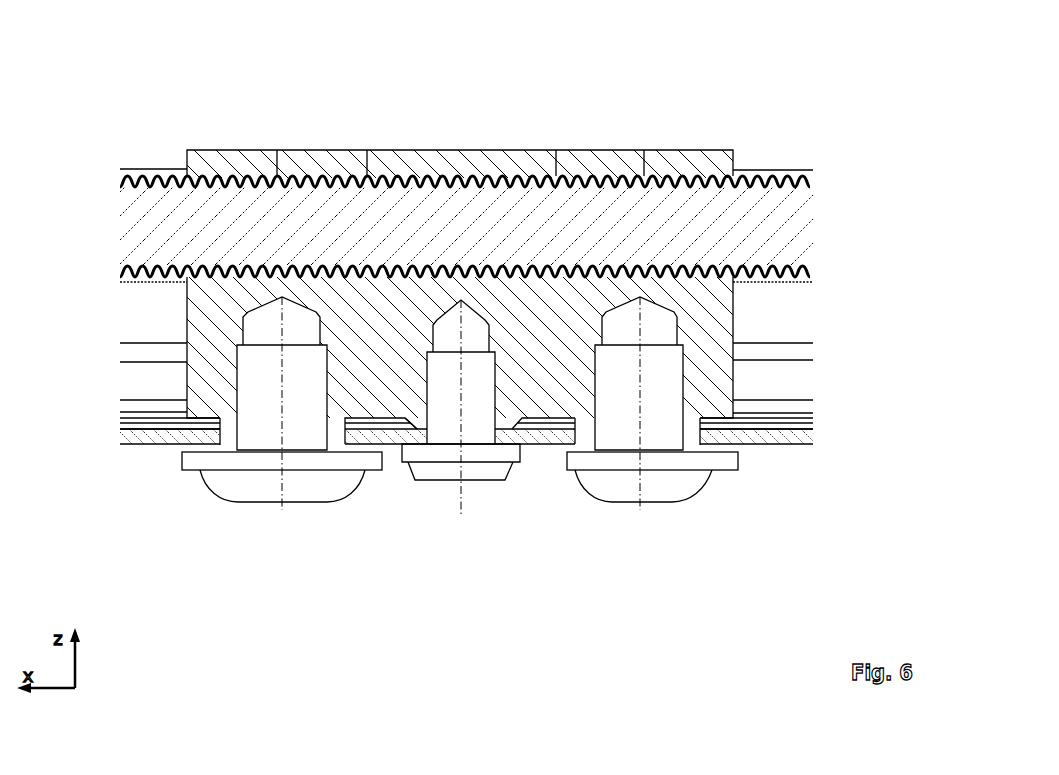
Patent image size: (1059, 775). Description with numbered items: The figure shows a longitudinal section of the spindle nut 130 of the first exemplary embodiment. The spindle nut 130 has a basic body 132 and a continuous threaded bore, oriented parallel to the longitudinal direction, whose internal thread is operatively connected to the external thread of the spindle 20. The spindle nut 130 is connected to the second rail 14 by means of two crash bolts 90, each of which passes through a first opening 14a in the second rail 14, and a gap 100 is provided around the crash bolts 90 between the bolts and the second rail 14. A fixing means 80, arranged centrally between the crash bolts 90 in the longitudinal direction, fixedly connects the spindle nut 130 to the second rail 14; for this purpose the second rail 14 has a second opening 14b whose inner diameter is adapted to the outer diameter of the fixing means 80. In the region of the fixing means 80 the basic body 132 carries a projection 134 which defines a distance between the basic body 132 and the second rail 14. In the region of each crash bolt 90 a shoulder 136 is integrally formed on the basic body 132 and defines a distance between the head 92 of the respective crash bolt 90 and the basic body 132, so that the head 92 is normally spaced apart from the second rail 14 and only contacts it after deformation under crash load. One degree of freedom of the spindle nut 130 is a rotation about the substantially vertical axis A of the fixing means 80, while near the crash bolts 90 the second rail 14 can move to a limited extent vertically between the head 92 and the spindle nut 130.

The spindle nut 130 is at (242, 128).
The spindle 20 is at (780, 238).
The basic body 132 is at (547, 310).
The shoulder 136 is at (230, 442).
The second rail 14 is at (468, 484).
The first opening 14a is at (182, 442).
The second opening 14b is at (499, 446).
The gap 100 is at (215, 435).
The projection 134 is at (417, 444).
The crash bolt 90 is at (253, 369).
The axis A is at (458, 485).
The fixing means 80 is at (437, 462).
The head 92 is at (268, 491).